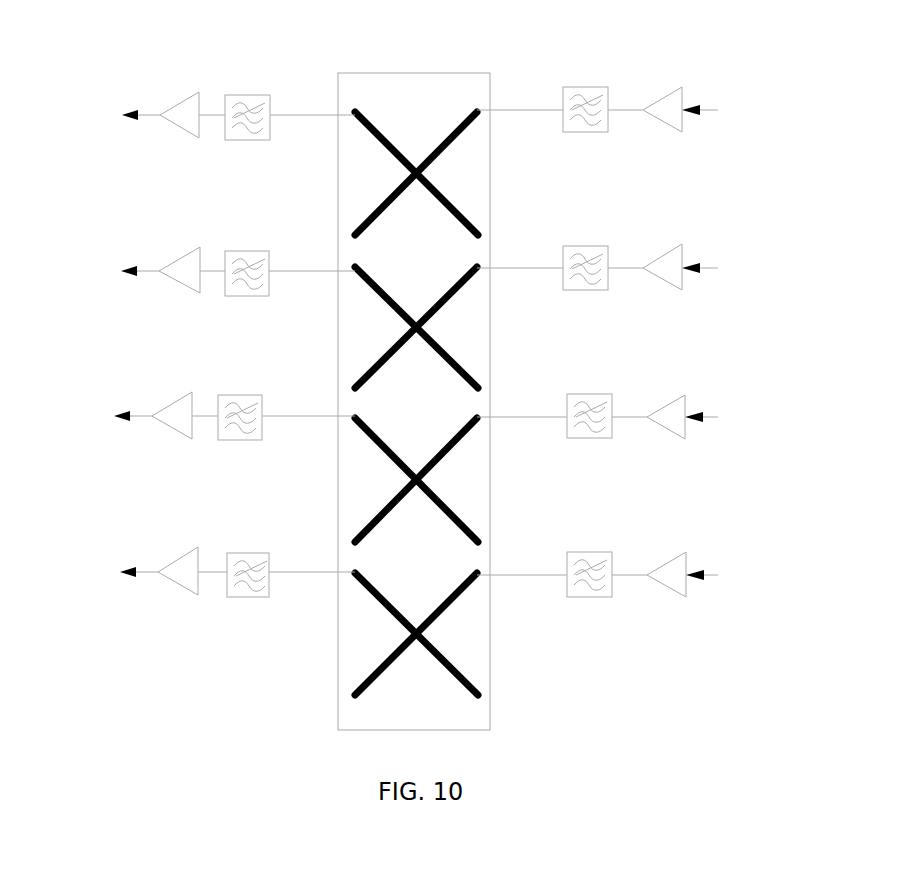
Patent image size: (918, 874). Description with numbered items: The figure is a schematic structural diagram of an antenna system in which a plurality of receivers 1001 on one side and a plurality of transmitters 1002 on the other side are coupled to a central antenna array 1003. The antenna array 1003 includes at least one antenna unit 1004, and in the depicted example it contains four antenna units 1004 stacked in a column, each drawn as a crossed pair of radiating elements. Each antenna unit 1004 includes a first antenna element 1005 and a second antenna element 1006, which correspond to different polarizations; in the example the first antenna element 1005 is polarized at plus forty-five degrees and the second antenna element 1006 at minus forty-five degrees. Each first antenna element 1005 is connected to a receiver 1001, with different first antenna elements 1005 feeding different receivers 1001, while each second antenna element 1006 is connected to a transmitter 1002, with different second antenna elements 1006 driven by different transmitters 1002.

The receiver 1001 is at (117, 314).
The transmitter 1002 is at (732, 308).
The antenna array 1003 is at (443, 368).
The antenna unit 1004 is at (514, 403).
The first antenna element 1005 is at (204, 368).
The second antenna element 1006 is at (632, 360).